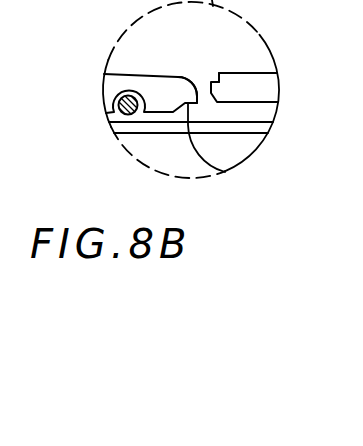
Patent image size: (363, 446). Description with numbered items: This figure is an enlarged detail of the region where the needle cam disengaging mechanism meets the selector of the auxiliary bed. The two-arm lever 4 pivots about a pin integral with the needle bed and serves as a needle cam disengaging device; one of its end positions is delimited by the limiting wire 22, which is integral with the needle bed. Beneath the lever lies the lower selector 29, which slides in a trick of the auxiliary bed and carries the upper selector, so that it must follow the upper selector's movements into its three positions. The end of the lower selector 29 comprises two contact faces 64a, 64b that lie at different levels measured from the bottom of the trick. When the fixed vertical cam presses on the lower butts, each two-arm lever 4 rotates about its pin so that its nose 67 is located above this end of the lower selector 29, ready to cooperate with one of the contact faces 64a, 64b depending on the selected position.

The two-arm lever 4 is at (115, 82).
The limiting wire 22 is at (116, 113).
The lower selector 29 is at (260, 92).
The contact face 64a is at (227, 73).
The contact face 64b is at (209, 80).
The nose 67 is at (219, 170).